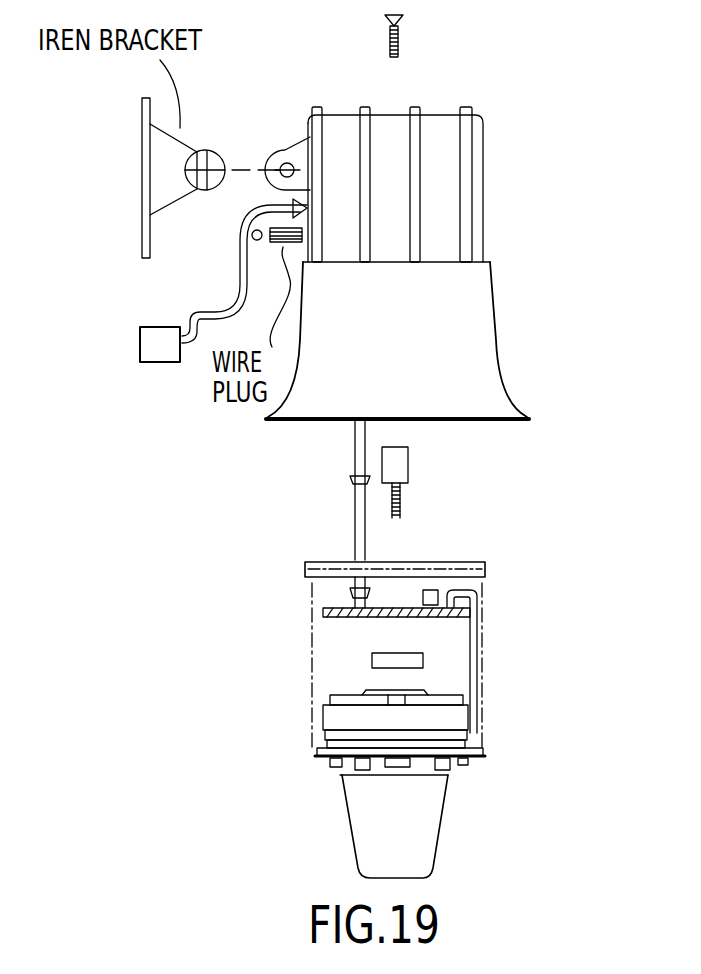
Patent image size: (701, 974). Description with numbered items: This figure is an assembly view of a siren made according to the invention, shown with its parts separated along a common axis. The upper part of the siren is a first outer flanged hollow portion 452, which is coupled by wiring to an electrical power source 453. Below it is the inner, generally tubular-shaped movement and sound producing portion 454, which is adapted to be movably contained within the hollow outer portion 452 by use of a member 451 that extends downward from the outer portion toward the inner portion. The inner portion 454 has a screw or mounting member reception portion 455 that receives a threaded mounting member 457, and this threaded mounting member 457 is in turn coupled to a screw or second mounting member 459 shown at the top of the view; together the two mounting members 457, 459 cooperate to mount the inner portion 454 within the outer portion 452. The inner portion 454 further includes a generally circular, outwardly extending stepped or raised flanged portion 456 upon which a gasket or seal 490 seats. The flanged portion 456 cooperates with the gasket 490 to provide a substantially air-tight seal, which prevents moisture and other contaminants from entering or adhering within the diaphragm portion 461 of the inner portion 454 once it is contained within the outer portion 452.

The member 451 is at (355, 450).
The first outer flanged hollow portion 452 is at (468, 283).
The electrical power source 453 is at (140, 348).
The movement and sound producing portion 454 is at (397, 707).
The mounting member reception portion 455 is at (390, 718).
The stepped or raised portion 456 is at (318, 755).
The threaded mounting member 457 is at (406, 485).
The second mounting member 459 is at (397, 57).
The diaphragm portion 461 is at (263, 608).
The gasket or seal 490 is at (317, 752).